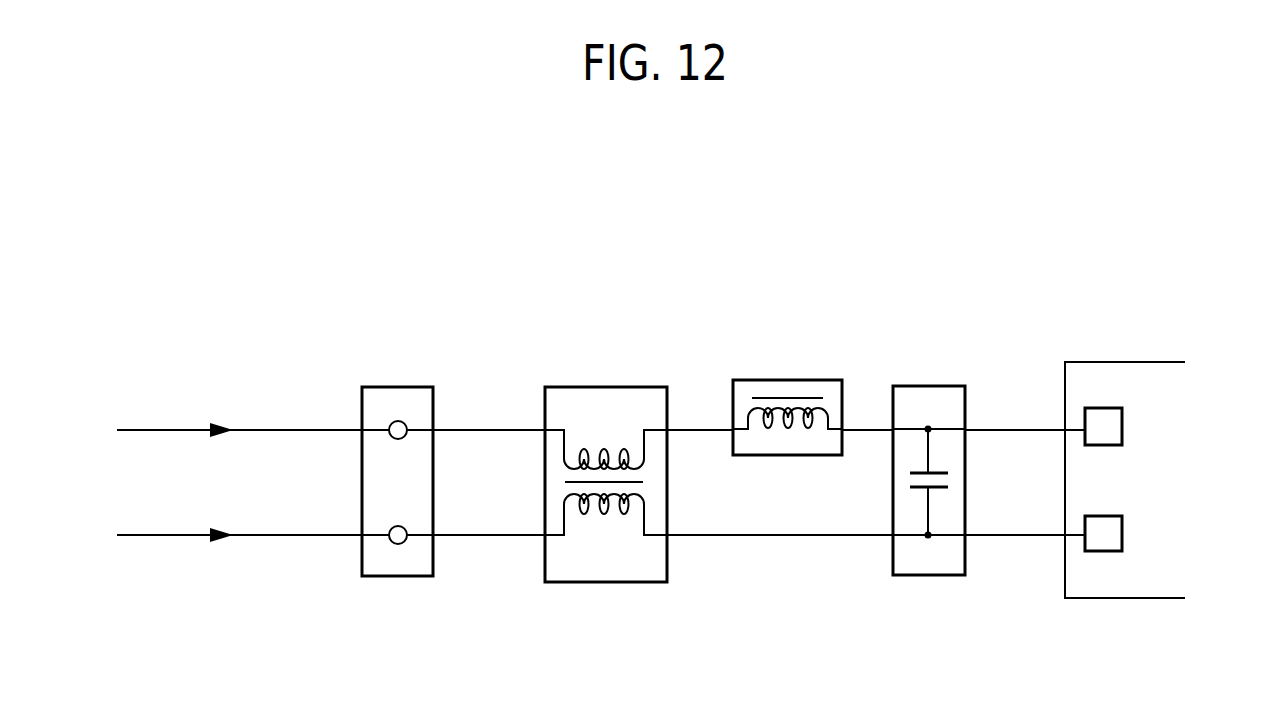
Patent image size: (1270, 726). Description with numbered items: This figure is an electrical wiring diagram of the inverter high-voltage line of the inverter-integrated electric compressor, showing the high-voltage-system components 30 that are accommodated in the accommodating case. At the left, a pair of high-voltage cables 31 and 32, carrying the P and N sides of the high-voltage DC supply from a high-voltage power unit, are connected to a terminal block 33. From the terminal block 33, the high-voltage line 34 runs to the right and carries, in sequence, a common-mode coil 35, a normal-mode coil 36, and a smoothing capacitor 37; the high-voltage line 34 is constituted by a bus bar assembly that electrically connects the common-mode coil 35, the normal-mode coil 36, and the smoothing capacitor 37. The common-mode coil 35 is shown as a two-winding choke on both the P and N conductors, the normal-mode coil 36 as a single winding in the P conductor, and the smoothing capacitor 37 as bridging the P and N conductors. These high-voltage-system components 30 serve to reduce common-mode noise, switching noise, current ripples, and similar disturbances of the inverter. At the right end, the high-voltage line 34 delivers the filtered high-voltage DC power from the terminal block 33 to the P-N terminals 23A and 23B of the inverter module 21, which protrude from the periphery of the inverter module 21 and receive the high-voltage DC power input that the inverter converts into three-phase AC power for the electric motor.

The high-voltage-system components 30 is at (679, 222).
The high-voltage cable 31 is at (169, 429).
The high-voltage cable 32 is at (157, 537).
The terminal block 33 is at (401, 387).
The high-voltage line 34 is at (777, 537).
The common-mode coil 35 is at (610, 387).
The normal-mode coil 36 is at (793, 380).
The smoothing capacitor 37 is at (927, 386).
The inverter module 21 is at (1118, 373).
The P terminal 23A is at (1107, 440).
The N terminal 23B is at (1107, 550).